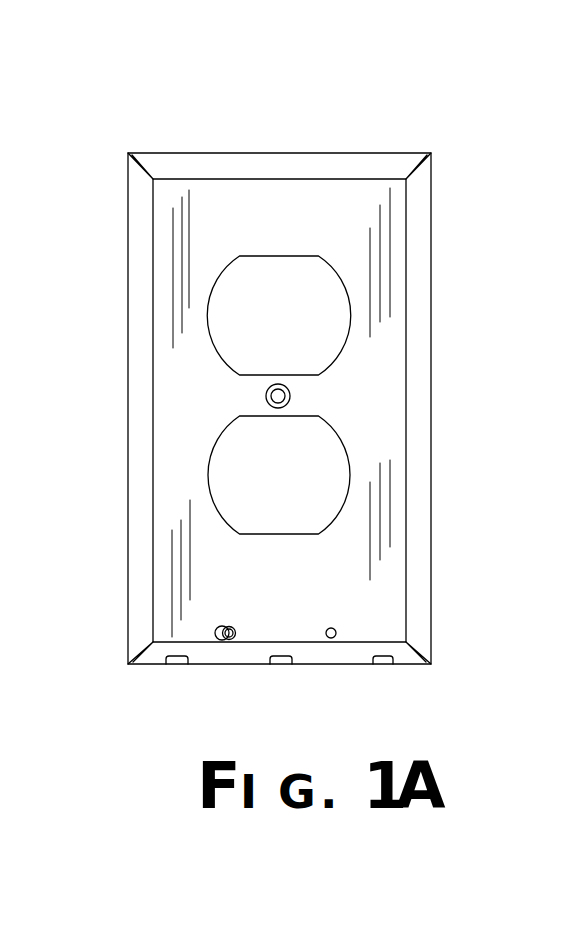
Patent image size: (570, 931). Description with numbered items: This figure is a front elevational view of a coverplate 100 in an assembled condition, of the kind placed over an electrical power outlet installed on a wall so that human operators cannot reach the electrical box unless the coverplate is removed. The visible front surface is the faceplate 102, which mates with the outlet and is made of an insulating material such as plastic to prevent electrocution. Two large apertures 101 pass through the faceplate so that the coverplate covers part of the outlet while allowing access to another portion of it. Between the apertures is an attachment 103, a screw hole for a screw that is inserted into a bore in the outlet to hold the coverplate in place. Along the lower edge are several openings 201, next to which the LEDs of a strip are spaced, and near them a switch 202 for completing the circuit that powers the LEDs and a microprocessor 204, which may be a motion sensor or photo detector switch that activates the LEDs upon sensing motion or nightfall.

The coverplate 100 is at (381, 137).
The apertures 101 is at (318, 306).
The faceplate 102 is at (390, 252).
The attachment 103 is at (276, 397).
The openings 201 is at (178, 665).
The switch 202 is at (229, 627).
The microprocessor 204 is at (337, 628).